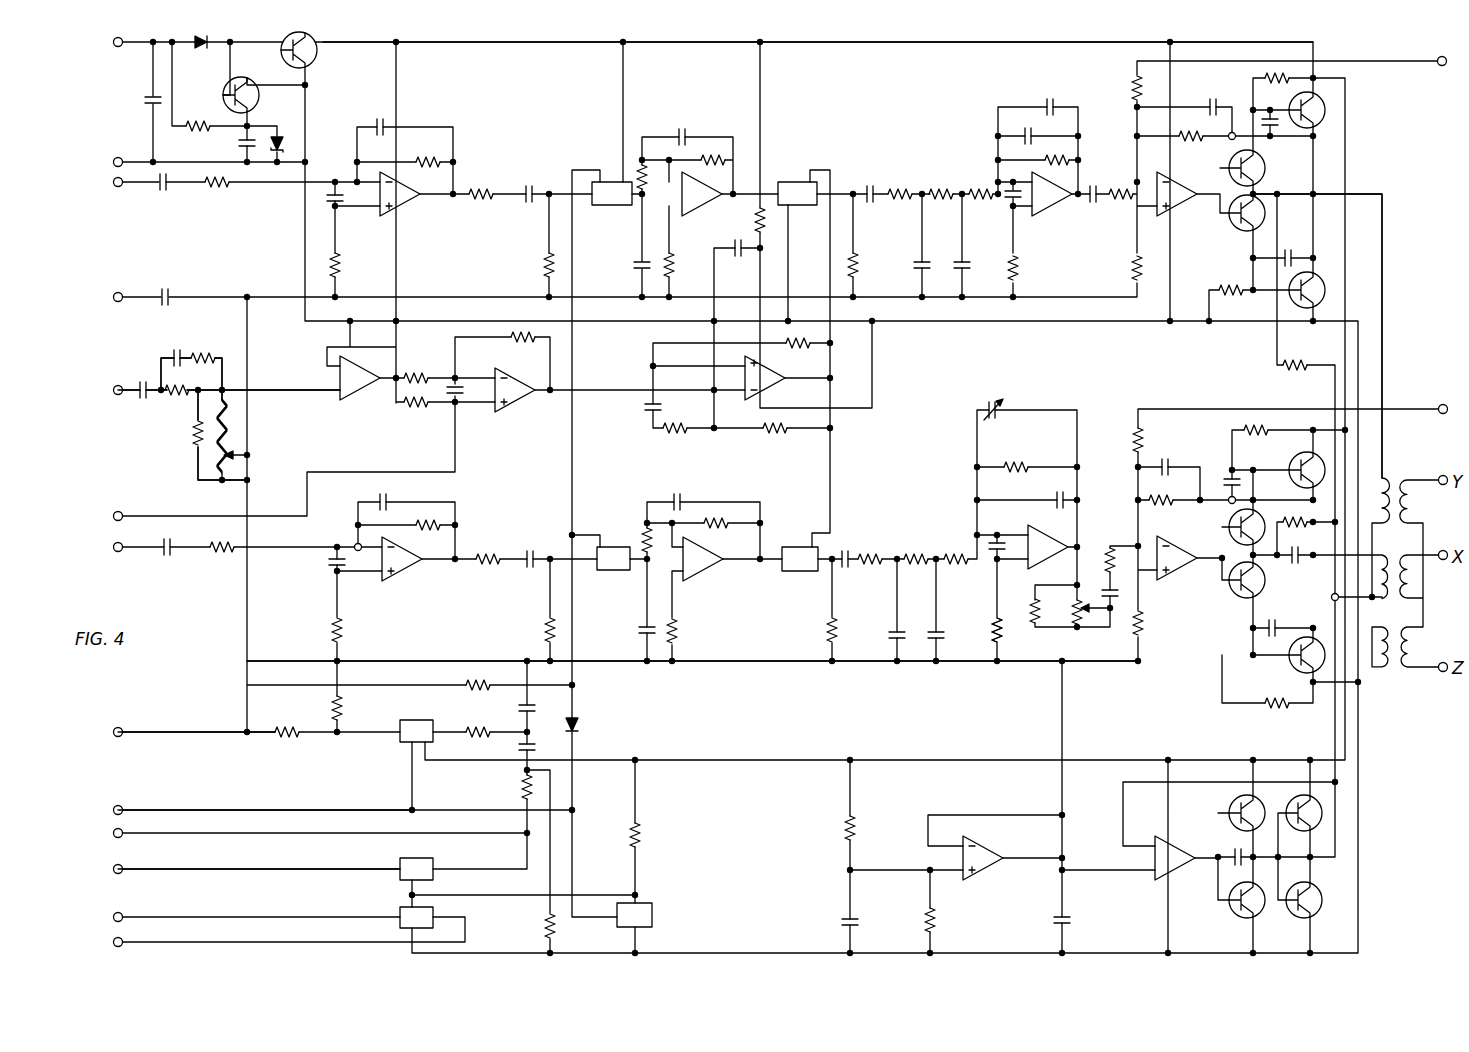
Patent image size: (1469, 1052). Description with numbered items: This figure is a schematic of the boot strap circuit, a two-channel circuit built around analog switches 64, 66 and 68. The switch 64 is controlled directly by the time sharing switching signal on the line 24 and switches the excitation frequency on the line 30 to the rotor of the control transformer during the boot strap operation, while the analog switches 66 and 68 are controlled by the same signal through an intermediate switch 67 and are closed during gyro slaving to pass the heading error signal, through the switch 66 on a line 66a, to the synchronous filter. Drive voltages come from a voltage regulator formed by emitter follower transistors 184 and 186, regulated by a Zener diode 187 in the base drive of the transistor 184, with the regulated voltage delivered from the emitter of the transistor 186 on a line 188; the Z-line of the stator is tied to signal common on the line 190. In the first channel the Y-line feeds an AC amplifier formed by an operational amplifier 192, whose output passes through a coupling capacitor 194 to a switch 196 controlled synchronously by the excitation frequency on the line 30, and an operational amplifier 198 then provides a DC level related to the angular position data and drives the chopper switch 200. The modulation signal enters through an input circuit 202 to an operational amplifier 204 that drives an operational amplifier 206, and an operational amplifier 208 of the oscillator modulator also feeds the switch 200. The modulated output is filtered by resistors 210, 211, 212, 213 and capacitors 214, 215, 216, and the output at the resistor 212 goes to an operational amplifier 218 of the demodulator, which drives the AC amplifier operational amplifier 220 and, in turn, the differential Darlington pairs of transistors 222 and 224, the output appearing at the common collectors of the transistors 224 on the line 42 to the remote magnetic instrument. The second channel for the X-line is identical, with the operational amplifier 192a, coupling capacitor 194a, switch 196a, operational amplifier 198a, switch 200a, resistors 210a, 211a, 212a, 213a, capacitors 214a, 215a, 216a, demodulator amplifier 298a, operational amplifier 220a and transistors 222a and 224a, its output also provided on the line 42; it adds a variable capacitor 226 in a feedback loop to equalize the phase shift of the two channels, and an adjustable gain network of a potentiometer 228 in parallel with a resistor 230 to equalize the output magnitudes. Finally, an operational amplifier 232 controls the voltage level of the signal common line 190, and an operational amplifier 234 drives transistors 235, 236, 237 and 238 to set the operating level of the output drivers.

The emitter follower transistor 184 is at (209, 92).
The emitter follower transistor 186 is at (282, 56).
The Zener diode 187 is at (281, 134).
The line 188 is at (703, 44).
The signal common line 190 is at (748, 662).
The operational amplifier 192 is at (414, 203).
The operational amplifier 192a is at (412, 576).
The coupling capacitor 194 is at (529, 178).
The coupling capacitor 194a is at (529, 552).
The switch 196 is at (608, 186).
The switch 196a is at (614, 542).
The operational amplifier 198 is at (708, 202).
The operational amplifier 198a is at (706, 566).
The switch 200 is at (798, 184).
The switch 200a is at (810, 571).
The input circuit 202 is at (218, 333).
The operational amplifier 204 is at (360, 392).
The operational amplifier 206 is at (522, 408).
The operational amplifier 208 is at (740, 379).
The resistor 210 is at (902, 188).
The resistor 210a is at (874, 556).
The resistor 211 is at (939, 190).
The resistor 211a is at (916, 554).
The resistor 212 is at (977, 190).
The resistor 212a is at (956, 556).
The resistor 213 is at (856, 262).
The resistor 213a is at (834, 616).
The capacitor 214 is at (868, 186).
The capacitor 214a is at (850, 556).
The capacitor 215 is at (918, 270).
The capacitor 215a is at (894, 640).
The capacitor 216 is at (965, 268).
The capacitor 216a is at (940, 630).
The operational amplifier 218 is at (1058, 202).
The operational amplifier 220 is at (1196, 203).
The operational amplifier 220a is at (1180, 570).
The Darlington pair transistors 222 is at (1265, 172).
The Darlington pair transistors 222a is at (1228, 530).
The Darlington pair transistors 224 is at (1324, 100).
The Darlington pair transistors 224a is at (1293, 462).
The variable capacitor 226 is at (988, 400).
The potentiometer 228 is at (1074, 596).
The resistor 230 is at (1004, 633).
The operational amplifier 232 is at (984, 851).
The operational amplifier 234 is at (1158, 868).
The transistor 235 is at (1230, 804).
The transistor 236 is at (1234, 916).
The transistor 237 is at (1322, 812).
The transistor 238 is at (1322, 898).
The amplifier 298a is at (1038, 529).
The line 42 is at (1382, 194).
The line 30 is at (163, 730).
The line 24 is at (246, 808).
The analog switch 64 is at (420, 720).
The analog switch 66 is at (400, 860).
The line 66a is at (283, 868).
The intermediate switch 67 is at (653, 915).
The analog switch 68 is at (400, 908).